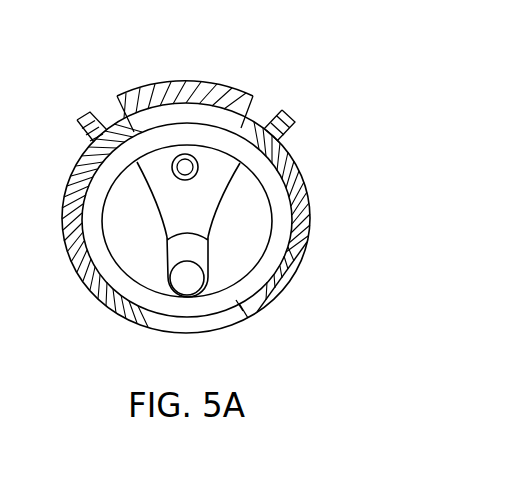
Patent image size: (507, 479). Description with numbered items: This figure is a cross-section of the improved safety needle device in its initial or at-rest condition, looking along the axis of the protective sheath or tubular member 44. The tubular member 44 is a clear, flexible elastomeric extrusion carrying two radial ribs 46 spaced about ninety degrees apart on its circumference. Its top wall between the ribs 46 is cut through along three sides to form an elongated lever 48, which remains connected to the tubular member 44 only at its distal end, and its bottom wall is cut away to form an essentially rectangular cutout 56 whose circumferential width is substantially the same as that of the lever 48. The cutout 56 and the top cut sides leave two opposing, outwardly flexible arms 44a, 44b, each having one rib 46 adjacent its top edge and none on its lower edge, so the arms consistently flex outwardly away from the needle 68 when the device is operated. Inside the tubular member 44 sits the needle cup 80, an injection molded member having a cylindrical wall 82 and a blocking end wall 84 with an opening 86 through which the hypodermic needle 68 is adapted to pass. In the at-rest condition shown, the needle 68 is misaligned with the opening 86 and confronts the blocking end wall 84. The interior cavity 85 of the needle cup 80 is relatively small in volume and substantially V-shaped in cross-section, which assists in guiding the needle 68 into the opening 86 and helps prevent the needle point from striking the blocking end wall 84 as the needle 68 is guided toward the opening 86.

The tubular member 44 is at (306, 272).
The flexible arm 44a is at (62, 221).
The flexible arm 44b is at (310, 205).
The radial ribs 46 is at (77, 125).
The lever 48 is at (192, 90).
The cutout 56 is at (224, 318).
The hypodermic needle 68 is at (198, 170).
The needle cup 80 is at (148, 323).
The cylindrical wall 82 is at (88, 240).
The blocking end wall 84 is at (196, 216).
The interior cavity 85 is at (175, 187).
The opening 86 is at (192, 272).